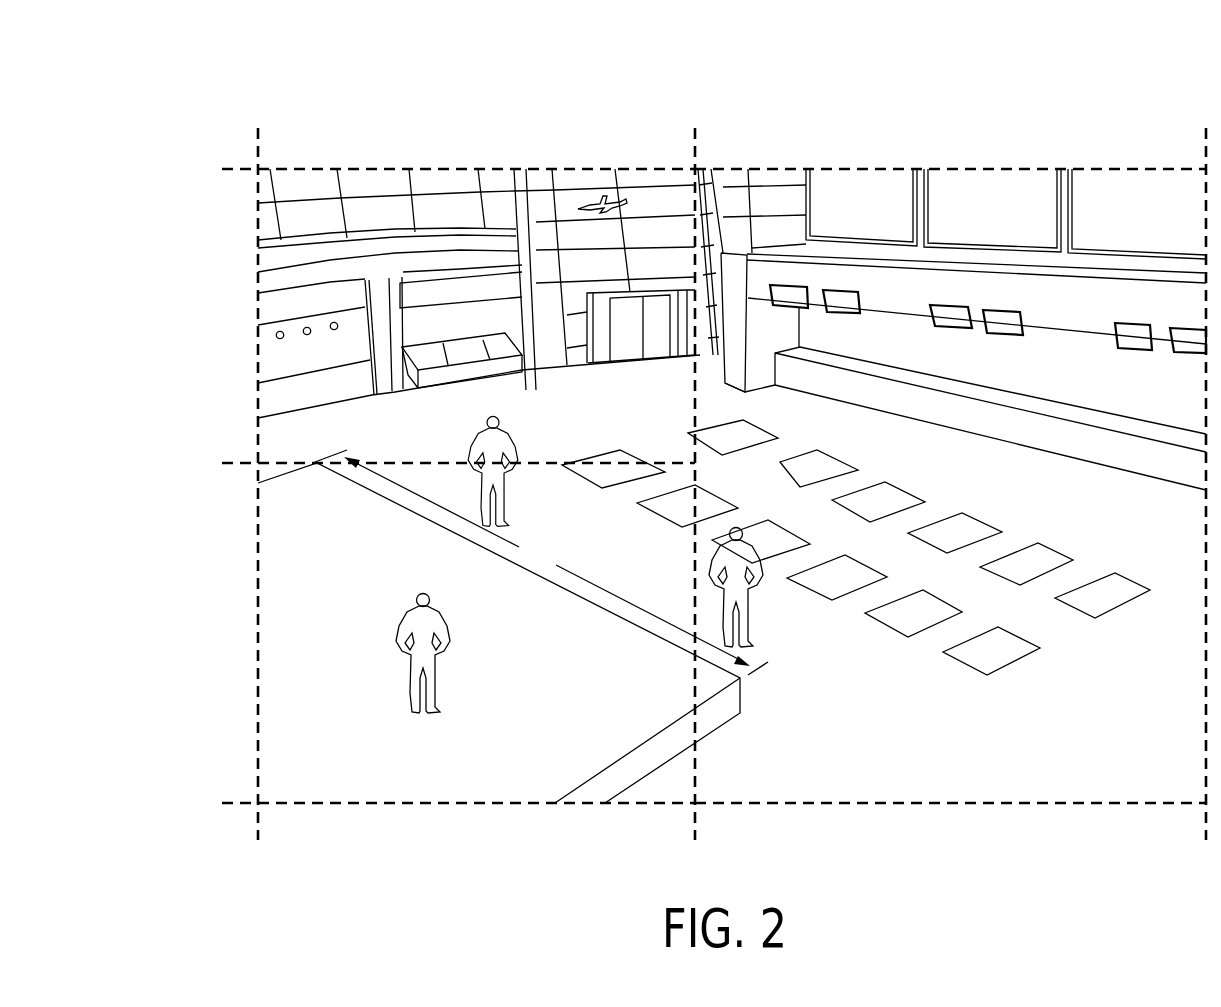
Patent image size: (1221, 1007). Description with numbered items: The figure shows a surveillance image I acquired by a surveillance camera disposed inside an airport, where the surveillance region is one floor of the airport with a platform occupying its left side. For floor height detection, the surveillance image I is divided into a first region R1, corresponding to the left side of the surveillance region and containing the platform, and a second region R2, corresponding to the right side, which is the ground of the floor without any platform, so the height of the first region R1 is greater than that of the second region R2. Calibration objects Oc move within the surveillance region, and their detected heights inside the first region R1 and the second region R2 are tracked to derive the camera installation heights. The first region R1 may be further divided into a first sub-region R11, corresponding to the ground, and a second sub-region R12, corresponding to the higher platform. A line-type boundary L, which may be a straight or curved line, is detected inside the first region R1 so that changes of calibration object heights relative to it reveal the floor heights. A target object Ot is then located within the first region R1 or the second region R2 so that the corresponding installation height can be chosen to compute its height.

The surveillance image I is at (1150, 98).
The first region R1 is at (458, 492).
The second region R2 is at (884, 489).
The first sub-region R11 is at (290, 263).
The second sub-region R12 is at (290, 573).
The line-type boundary L is at (541, 562).
The calibration object Oc is at (503, 440).
The target object Ot is at (742, 532).